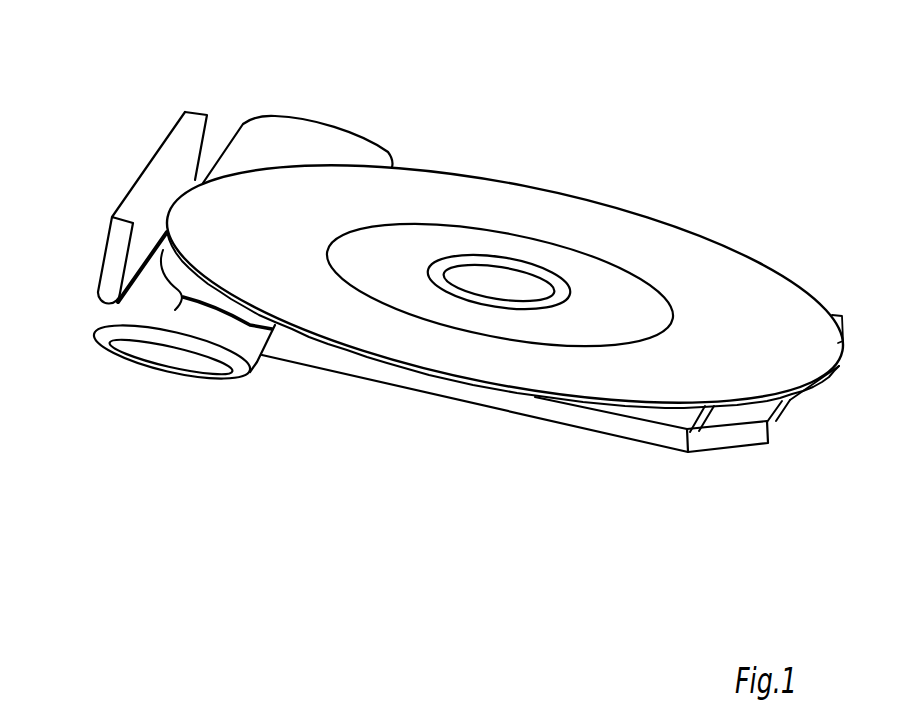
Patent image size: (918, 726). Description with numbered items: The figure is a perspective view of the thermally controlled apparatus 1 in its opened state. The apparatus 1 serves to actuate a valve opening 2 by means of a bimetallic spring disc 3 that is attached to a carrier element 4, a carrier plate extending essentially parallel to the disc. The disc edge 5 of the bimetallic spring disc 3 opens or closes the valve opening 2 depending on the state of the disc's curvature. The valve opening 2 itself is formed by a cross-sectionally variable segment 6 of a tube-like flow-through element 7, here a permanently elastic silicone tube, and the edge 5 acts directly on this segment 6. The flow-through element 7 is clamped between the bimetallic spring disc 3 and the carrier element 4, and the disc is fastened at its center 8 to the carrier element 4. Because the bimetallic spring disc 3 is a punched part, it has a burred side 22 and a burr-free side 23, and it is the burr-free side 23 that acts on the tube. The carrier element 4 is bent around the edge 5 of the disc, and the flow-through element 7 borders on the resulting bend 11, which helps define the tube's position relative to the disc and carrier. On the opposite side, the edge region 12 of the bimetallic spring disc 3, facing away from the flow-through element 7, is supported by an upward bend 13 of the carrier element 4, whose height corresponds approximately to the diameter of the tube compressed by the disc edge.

The thermally controlled apparatus 1 is at (584, 128).
The valve opening 2 is at (176, 358).
The bimetallic spring disc 3 is at (510, 362).
The carrier element 4 is at (619, 428).
The disc edge 5 is at (413, 371).
The cross-sectionally variable segment 6 is at (124, 341).
The flow-through element 7 is at (238, 345).
The center 8 is at (527, 290).
The bend 11 is at (115, 260).
The edge region 12 is at (793, 404).
The upward bend 13 is at (775, 424).
The burred side 22 is at (766, 290).
The burr-free side 23 is at (719, 424).